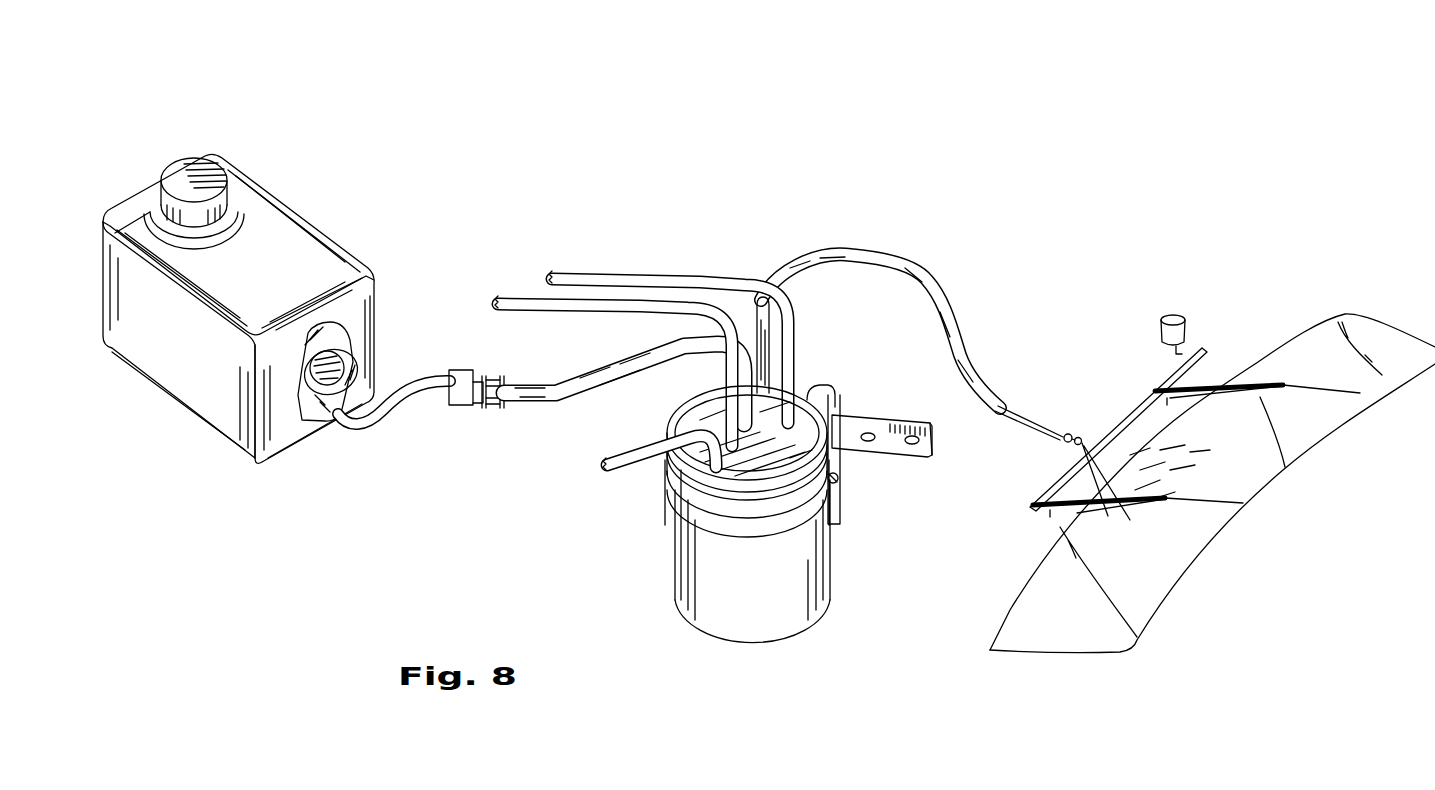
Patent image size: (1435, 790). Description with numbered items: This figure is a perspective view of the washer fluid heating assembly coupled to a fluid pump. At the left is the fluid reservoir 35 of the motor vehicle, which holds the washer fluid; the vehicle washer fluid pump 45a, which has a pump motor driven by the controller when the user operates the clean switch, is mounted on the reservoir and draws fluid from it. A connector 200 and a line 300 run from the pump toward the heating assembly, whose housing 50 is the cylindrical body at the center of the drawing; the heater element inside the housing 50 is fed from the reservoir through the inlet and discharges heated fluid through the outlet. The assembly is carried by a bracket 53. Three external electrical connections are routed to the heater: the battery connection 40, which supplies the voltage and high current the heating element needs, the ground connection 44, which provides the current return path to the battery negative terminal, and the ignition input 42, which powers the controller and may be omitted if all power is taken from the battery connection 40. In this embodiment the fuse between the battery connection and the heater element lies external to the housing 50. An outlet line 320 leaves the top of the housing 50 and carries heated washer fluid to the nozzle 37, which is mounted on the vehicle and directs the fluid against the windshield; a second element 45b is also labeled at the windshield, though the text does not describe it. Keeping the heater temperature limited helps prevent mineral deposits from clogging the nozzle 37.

The fluid reservoir 35 is at (293, 257).
The vehicle washer fluid pump 45a is at (314, 417).
The connector 200 is at (462, 370).
The fluid line to heater 300 is at (628, 368).
The ground connection 44 is at (491, 299).
The battery connection 40 is at (551, 274).
The ignition input 42 is at (608, 466).
The housing 50 is at (780, 601).
The mounting bracket 53 is at (903, 437).
The outlet line 320 is at (998, 408).
The nozzle 37 is at (1074, 434).
The spray nozzle 45b is at (1162, 333).